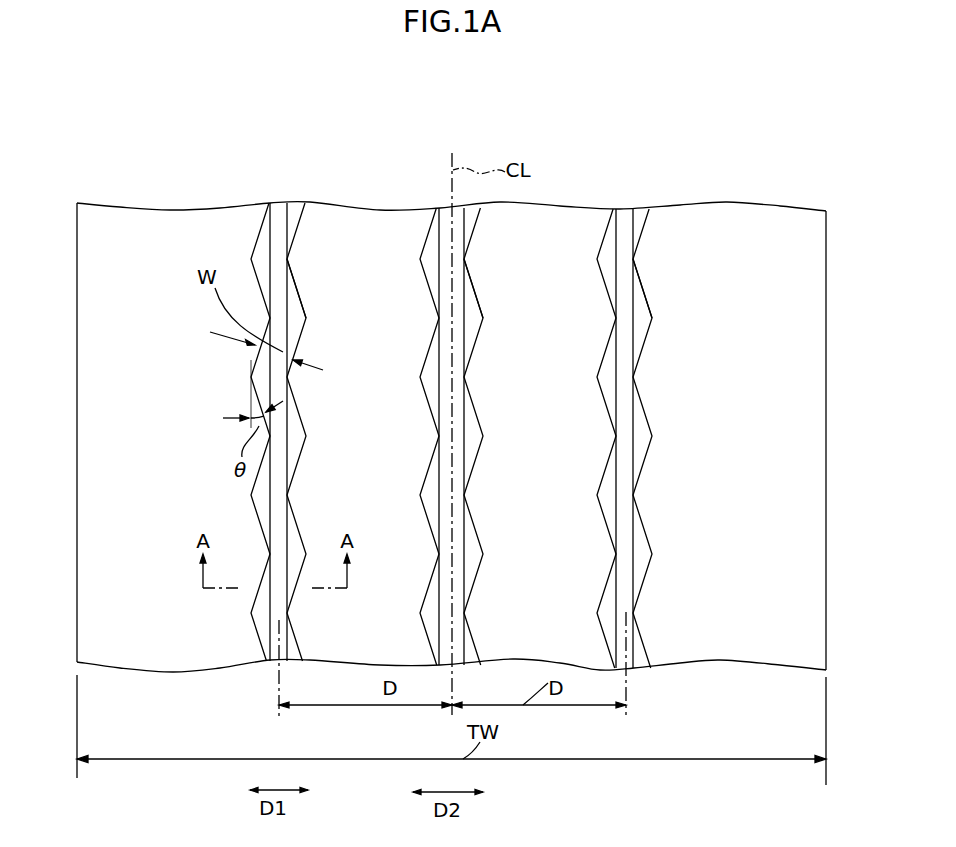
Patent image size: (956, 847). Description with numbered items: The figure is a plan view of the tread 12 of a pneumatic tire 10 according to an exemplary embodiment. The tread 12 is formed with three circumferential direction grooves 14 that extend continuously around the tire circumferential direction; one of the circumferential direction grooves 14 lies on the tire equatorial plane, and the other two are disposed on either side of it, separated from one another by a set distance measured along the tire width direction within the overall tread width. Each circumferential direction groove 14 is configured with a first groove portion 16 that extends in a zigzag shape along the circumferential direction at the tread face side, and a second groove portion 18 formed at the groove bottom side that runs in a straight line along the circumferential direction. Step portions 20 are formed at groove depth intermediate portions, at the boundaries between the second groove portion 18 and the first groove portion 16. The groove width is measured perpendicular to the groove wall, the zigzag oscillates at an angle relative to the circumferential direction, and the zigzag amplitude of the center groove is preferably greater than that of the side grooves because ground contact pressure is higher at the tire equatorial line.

The pneumatic tire 10 is at (665, 120).
The tread 12 is at (563, 203).
The circumferential direction groove 14 is at (472, 402).
The first groove portion 16 is at (643, 303).
The second groove portion 18 is at (629, 439).
The step portion 20 is at (646, 320).